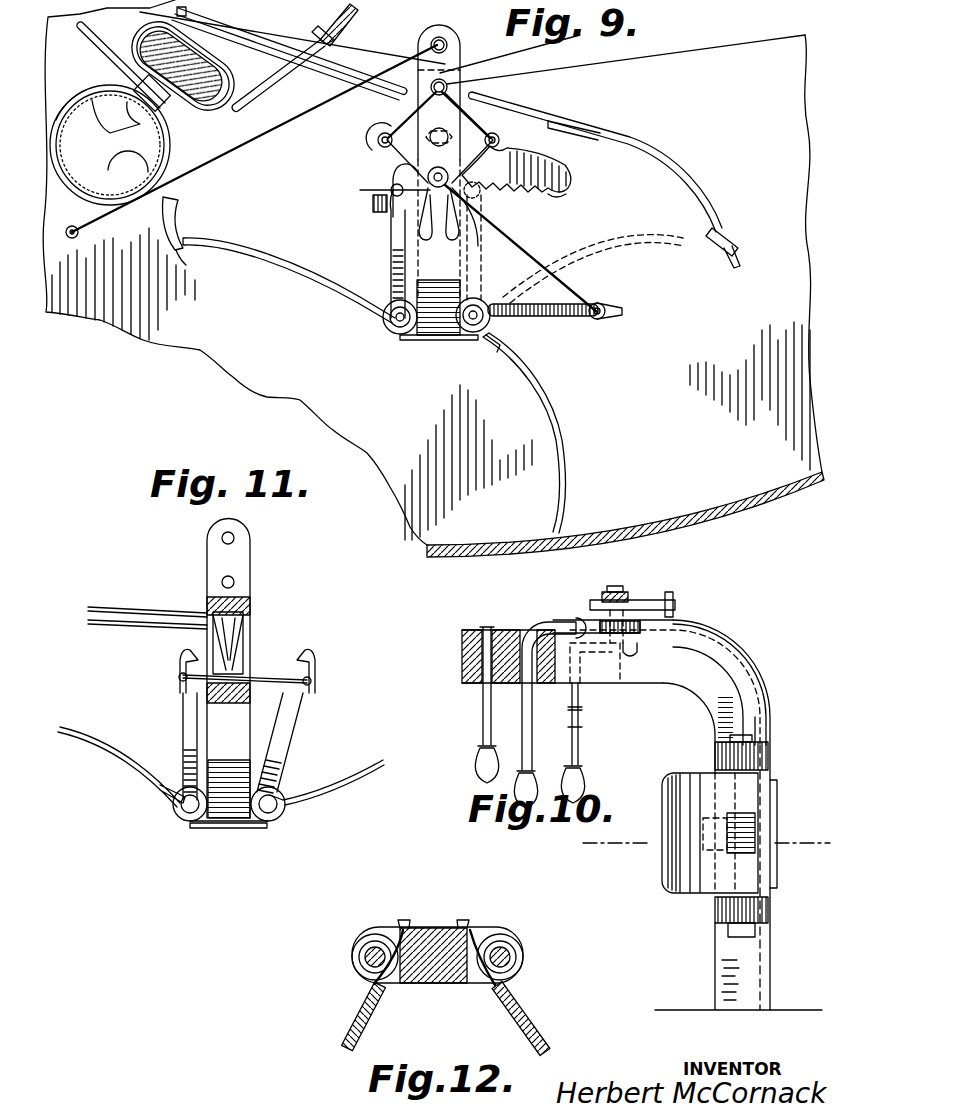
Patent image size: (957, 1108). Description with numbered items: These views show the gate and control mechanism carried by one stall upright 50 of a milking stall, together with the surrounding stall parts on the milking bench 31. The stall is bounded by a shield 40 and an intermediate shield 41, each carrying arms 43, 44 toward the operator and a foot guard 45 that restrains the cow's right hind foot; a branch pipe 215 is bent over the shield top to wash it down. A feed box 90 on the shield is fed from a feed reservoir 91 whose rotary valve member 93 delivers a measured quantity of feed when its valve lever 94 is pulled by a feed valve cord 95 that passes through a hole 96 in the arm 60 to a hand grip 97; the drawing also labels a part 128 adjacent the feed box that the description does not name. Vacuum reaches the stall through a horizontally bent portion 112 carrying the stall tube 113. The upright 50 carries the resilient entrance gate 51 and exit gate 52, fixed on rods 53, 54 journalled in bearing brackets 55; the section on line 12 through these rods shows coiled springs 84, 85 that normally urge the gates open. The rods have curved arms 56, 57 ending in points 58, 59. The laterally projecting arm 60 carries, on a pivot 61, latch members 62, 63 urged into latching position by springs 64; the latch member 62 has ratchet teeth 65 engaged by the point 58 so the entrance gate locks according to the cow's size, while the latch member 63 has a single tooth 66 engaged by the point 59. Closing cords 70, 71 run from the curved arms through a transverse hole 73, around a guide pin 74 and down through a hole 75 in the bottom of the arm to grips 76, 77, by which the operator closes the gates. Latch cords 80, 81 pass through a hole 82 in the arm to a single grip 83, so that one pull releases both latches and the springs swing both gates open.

In FIG. 9, the milking bench 31 is at (618, 75).
In FIG. 9, the shield 40 is at (687, 172).
In FIG. 9, the intermediate shield 41 is at (184, 203).
In FIG. 9, the arm 43 is at (518, 102).
In FIG. 9, the arm 44 is at (346, 48).
In FIG. 9, the foot guard 45 is at (554, 122).
In FIG. 9, the upright 50 is at (447, 330).
In FIG. 11, the upright 50 is at (242, 818).
In FIG. 10, the upright 50 is at (713, 959).
In FIG. 12, the upright 50 is at (431, 928).
In FIG. 9, the entrance gate 51 is at (558, 417).
In FIG. 11, the entrance gate 51 is at (358, 778).
In FIG. 12, the entrance gate 51 is at (507, 1020).
In FIG. 9, the exit gate 52 is at (304, 264).
In FIG. 11, the exit gate 52 is at (131, 773).
In FIG. 10, the exit gate 52 is at (666, 893).
In FIG. 12, the exit gate 52 is at (364, 1027).
In FIG. 12, the rod 53 is at (383, 946).
In FIG. 10, the rod 54 is at (766, 718).
In FIG. 12, the rod 54 is at (497, 946).
In FIG. 10, the bearing bracket 55 is at (769, 757).
In FIG. 9, the curved arm 56 is at (571, 320).
In FIG. 11, the curved arm 56 is at (300, 733).
In FIG. 9, the curved arm 57 is at (392, 258).
In FIG. 11, the curved arm 57 is at (183, 723).
In FIG. 10, the curved arm 57 is at (728, 652).
In FIG. 9, the point 58 is at (625, 310).
In FIG. 11, the point 58 is at (318, 676).
In FIG. 9, the point 59 is at (370, 191).
In FIG. 11, the point 59 is at (178, 669).
In FIG. 9, the arm 60 is at (461, 67).
In FIG. 11, the arm 60 is at (207, 577).
In FIG. 10, the arm 60 is at (676, 677).
In FIG. 9, the pivot 61 is at (481, 191).
In FIG. 10, the pivot 61 is at (620, 590).
In FIG. 9, the latch member 62 is at (546, 160).
In FIG. 9, the latch member 63 is at (392, 163).
In FIG. 9, the spring 64 is at (417, 226).
In FIG. 10, the spring 64 is at (664, 592).
In FIG. 9, the ratchet teeth 65 is at (558, 196).
In FIG. 9, the tooth 66 is at (388, 185).
In FIG. 9, the closing cord 70 is at (526, 252).
In FIG. 9, the closing cord 71 is at (372, 203).
In FIG. 11, the transverse hole 73 is at (252, 677).
In FIG. 11, the guide pin 74 is at (252, 645).
In FIG. 11, the hole 75 is at (238, 640).
In FIG. 10, the grip 76 is at (566, 754).
In FIG. 10, the grip 77 is at (593, 773).
In FIG. 9, the latch cord 80 is at (378, 133).
In FIG. 10, the latch cord 80 is at (552, 607).
In FIG. 9, the latch cord 81 is at (480, 132).
In FIG. 10, the latch cord 81 is at (566, 606).
In FIG. 9, the hole 82 is at (461, 76).
In FIG. 11, the hole 82 is at (236, 581).
In FIG. 10, the hole 82 is at (523, 630).
In FIG. 10, the grip 83 is at (520, 754).
In FIG. 10, the coiled spring 84 is at (760, 832).
In FIG. 12, the coiled spring 84 is at (520, 959).
In FIG. 12, the coiled spring 85 is at (355, 959).
In FIG. 9, the feed box 90 is at (218, 45).
In FIG. 9, the feed reservoir 91 is at (86, 96).
In FIG. 9, the rotary valve member 93 is at (143, 137).
In FIG. 9, the valve lever 94 is at (86, 223).
In FIG. 9, the feed valve cord 95 is at (310, 128).
In FIG. 9, the hole 96 is at (443, 44).
In FIG. 11, the hole 96 is at (236, 538).
In FIG. 10, the hole 96 is at (483, 628).
In FIG. 10, the hand grip 97 is at (472, 762).
In FIG. 9, the horizontally bent portion 112 is at (262, 86).
In FIG. 9, the stall tube 113 is at (352, 19).
In FIG. 9, the cylinder 128 is at (219, 113).
In FIG. 9, the branch pipe 215 is at (180, 254).
In FIG. 10, the section line 12 is at (706, 859).